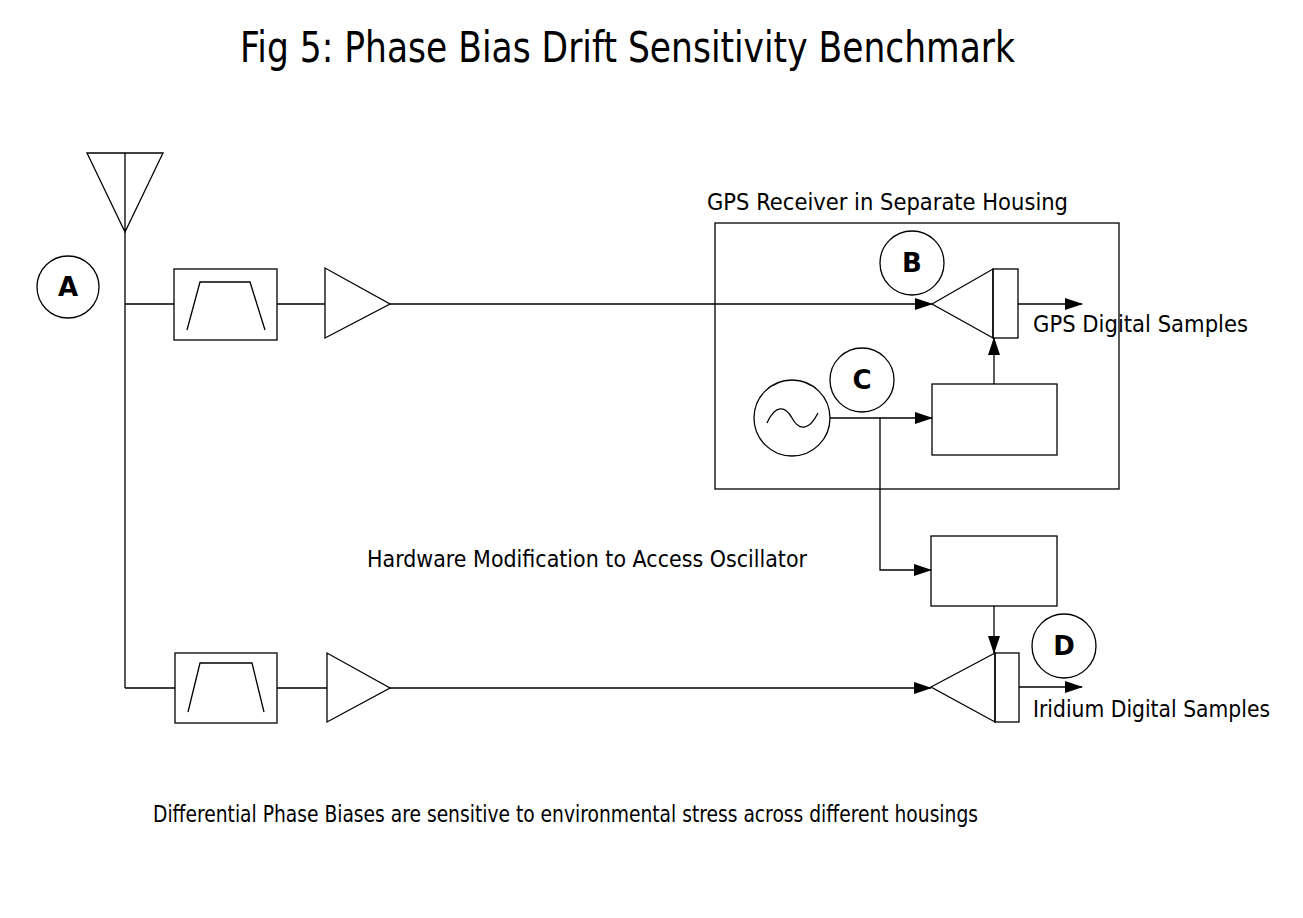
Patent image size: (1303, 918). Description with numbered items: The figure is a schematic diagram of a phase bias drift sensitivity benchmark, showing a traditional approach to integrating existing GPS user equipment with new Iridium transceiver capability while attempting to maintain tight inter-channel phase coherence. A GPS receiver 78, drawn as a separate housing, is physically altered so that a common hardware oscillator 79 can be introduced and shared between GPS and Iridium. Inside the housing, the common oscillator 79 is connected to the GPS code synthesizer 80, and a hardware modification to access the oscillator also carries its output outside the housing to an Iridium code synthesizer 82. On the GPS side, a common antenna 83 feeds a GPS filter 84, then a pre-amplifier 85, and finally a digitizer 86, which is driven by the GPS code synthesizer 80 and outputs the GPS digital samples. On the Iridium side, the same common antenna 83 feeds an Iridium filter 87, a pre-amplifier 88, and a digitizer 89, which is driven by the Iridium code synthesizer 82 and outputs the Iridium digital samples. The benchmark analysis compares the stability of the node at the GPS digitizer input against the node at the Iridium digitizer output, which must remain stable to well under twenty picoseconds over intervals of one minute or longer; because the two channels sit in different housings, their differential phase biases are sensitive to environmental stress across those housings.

The receiver 78 is at (1105, 408).
The common hardware oscillator 79 is at (792, 443).
The GPS code synthesizer 80 is at (1043, 419).
The Iridium code synthesizer 82 is at (1045, 570).
The common antenna 83 is at (148, 175).
The GPS filter 84 is at (238, 317).
The pre-amplifier 85 is at (352, 303).
The digitizer 86 is at (1005, 280).
The Iridium filter 87 is at (239, 698).
The pre-amplifier 88 is at (352, 698).
The digitizer 89 is at (970, 687).